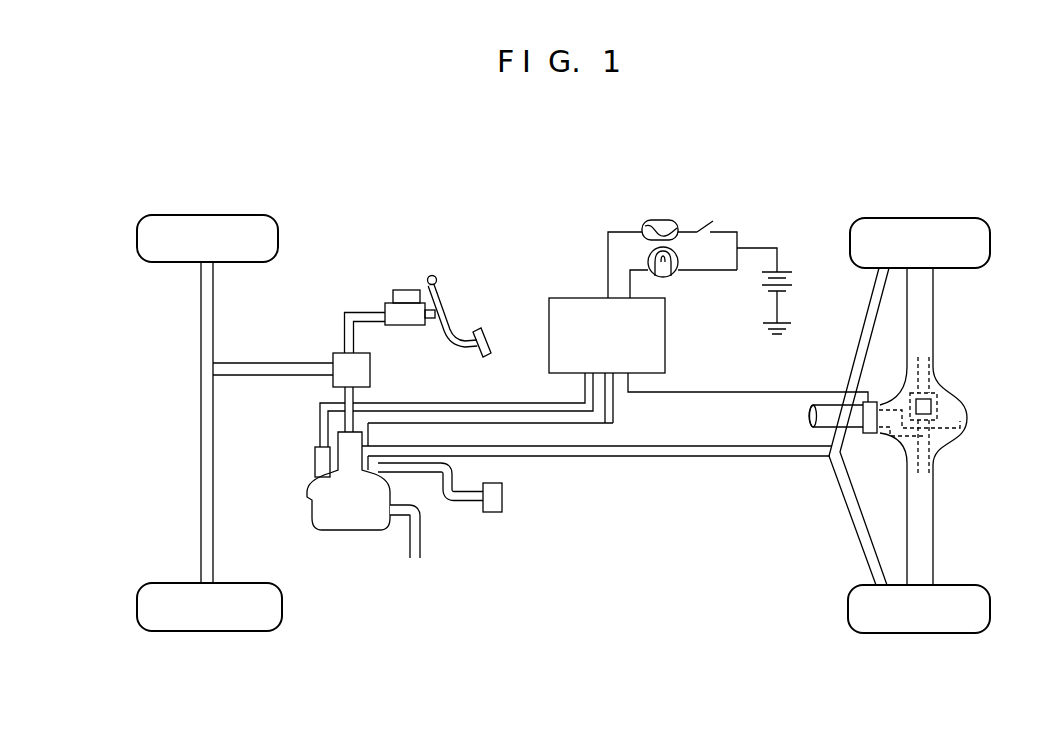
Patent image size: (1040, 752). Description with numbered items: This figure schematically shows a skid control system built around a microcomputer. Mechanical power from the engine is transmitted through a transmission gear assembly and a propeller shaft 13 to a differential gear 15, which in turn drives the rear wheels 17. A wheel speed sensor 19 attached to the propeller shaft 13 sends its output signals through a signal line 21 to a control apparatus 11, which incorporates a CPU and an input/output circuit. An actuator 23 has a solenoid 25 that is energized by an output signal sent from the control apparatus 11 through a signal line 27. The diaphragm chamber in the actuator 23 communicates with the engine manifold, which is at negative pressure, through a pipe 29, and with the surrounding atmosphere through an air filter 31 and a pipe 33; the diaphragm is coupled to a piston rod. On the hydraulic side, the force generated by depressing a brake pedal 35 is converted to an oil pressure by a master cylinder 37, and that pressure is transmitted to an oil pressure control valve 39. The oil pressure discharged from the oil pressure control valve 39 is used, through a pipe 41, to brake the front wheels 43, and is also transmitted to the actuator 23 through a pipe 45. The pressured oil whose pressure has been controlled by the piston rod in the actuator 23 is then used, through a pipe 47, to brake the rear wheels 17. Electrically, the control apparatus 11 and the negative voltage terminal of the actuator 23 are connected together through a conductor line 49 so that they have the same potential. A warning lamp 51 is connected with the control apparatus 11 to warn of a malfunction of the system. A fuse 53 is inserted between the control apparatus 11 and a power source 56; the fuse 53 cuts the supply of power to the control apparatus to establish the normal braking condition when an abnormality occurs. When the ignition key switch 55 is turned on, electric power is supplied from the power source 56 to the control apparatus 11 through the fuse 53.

The control apparatus 11 is at (665, 348).
The propeller shaft 13 is at (810, 414).
The differential gear 15 is at (942, 400).
The rear wheels 17 is at (922, 218).
The wheel speed sensor 19 is at (870, 433).
The signal line 21 is at (771, 392).
The actuator 23 is at (346, 531).
The solenoid 25 is at (315, 458).
The signal line 27 is at (492, 403).
The pipe 29 is at (420, 549).
The air filter 31 is at (503, 499).
The pipe 33 is at (450, 501).
The brake pedal 35 is at (489, 343).
The master cylinder 37 is at (404, 290).
The oil pressure control valve 39 is at (338, 356).
The pipe 41 is at (273, 362).
The front wheels 43 is at (200, 215).
The pipe 45 is at (346, 388).
The pipe 47 is at (676, 457).
The conductor line 49 is at (613, 404).
The warning lamp 51 is at (677, 255).
The fuse 53 is at (667, 223).
The ignition key switch 55 is at (713, 221).
The power source 56 is at (785, 254).